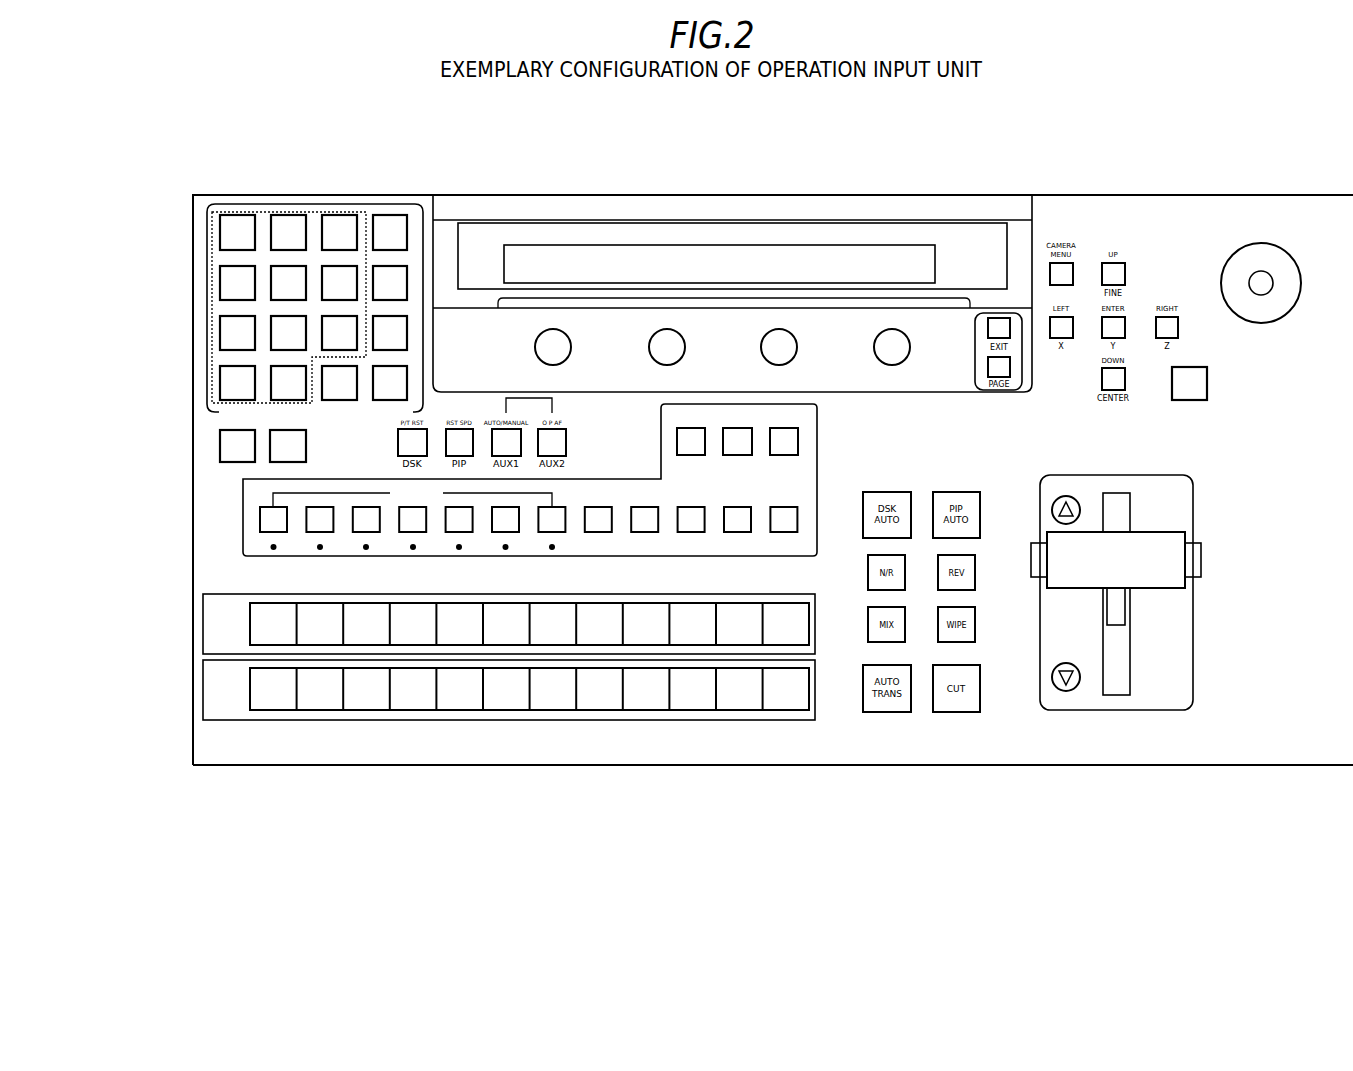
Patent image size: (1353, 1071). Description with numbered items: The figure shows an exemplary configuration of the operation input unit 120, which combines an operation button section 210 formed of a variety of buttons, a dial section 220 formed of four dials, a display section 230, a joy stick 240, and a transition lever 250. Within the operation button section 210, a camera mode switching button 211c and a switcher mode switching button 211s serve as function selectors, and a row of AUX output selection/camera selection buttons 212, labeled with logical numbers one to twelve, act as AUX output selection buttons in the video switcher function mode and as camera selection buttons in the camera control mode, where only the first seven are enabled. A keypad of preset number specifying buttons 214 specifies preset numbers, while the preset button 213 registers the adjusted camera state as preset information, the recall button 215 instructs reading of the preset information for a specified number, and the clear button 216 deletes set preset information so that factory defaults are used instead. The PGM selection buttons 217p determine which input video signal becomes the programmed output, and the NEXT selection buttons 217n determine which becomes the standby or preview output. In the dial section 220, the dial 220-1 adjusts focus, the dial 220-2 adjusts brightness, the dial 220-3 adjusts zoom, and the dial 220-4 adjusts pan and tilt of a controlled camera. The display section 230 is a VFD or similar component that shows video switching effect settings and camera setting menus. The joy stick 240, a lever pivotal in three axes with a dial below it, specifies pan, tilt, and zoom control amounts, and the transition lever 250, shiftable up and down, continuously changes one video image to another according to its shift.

The operation input unit 120 is at (230, 135).
The operation button section 210 is at (130, 198).
The camera mode switching button 211c is at (219, 447).
The switcher mode switching button 211s is at (307, 447).
The AUX output selection/camera selection buttons 212 is at (236, 520).
The preset button 213 is at (401, 316).
The preset number specifying buttons 214 is at (207, 312).
The recall button 215 is at (407, 373).
The clear button 216 is at (338, 378).
The PGM selection buttons 217p is at (190, 623).
The NEXT selection buttons 217n is at (190, 687).
The dial section 220 is at (734, 263).
The dial 220-1 is at (593, 360).
The dial 220-2 is at (707, 360).
The dial 220-3 is at (819, 360).
The dial 220-4 is at (931, 342).
The display section 230 is at (878, 245).
The joy stick 240 is at (1259, 243).
The transition lever 250 is at (1096, 710).